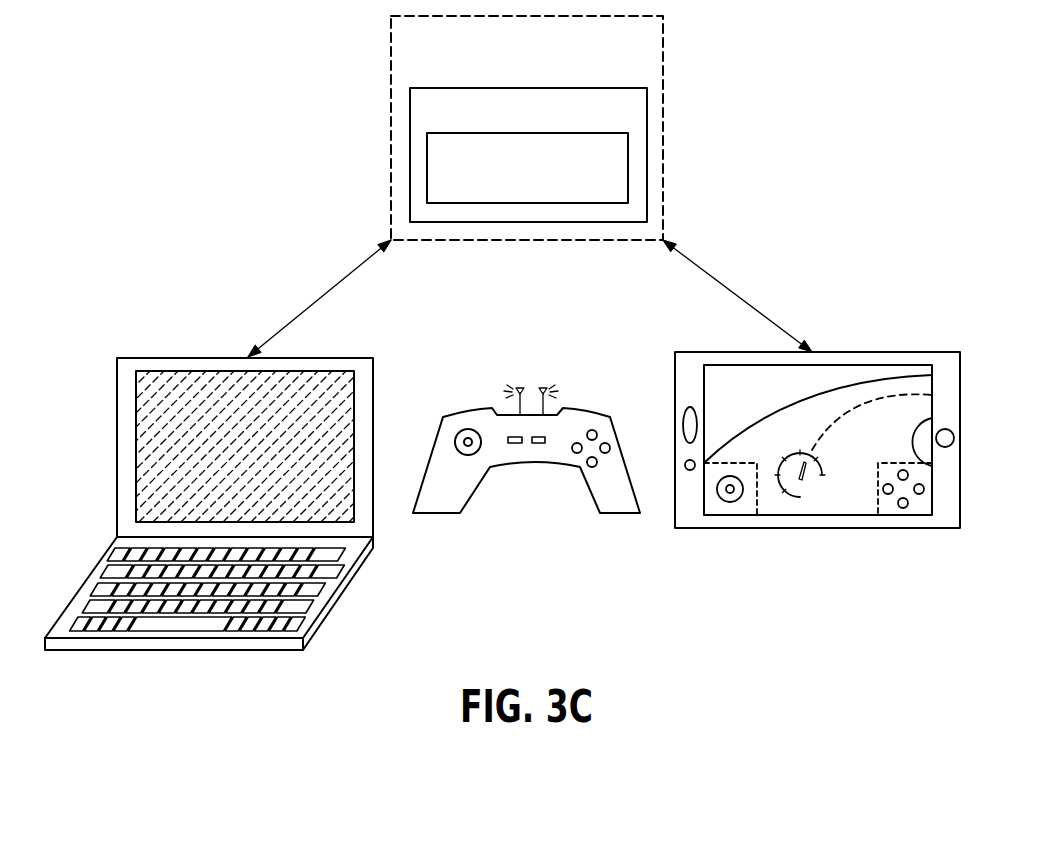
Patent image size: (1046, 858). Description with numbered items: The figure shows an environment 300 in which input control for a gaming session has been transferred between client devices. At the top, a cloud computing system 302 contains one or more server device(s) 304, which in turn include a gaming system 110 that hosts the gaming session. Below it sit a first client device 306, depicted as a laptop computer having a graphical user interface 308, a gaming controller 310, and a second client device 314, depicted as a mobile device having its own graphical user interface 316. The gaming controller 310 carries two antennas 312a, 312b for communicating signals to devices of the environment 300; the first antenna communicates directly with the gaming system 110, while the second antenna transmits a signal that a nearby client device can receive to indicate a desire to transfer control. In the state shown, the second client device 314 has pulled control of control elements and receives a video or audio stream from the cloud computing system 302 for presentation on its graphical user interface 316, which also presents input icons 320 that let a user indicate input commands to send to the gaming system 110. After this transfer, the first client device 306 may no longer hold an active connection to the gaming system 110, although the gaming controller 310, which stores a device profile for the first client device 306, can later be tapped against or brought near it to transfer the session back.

The environment 300 is at (318, 197).
The cloud computing system 302 is at (578, 76).
The server device(s) 304 is at (620, 122).
The gaming system 110 is at (615, 180).
The first client device 306 is at (250, 476).
The graphical user interface 308 is at (334, 384).
The gaming controller 310 is at (526, 431).
The first antenna 312a is at (519, 390).
The second antenna 312b is at (544, 390).
The second client device 314 is at (693, 352).
The graphical user interface 316 is at (911, 377).
The input icons 320 is at (825, 449).